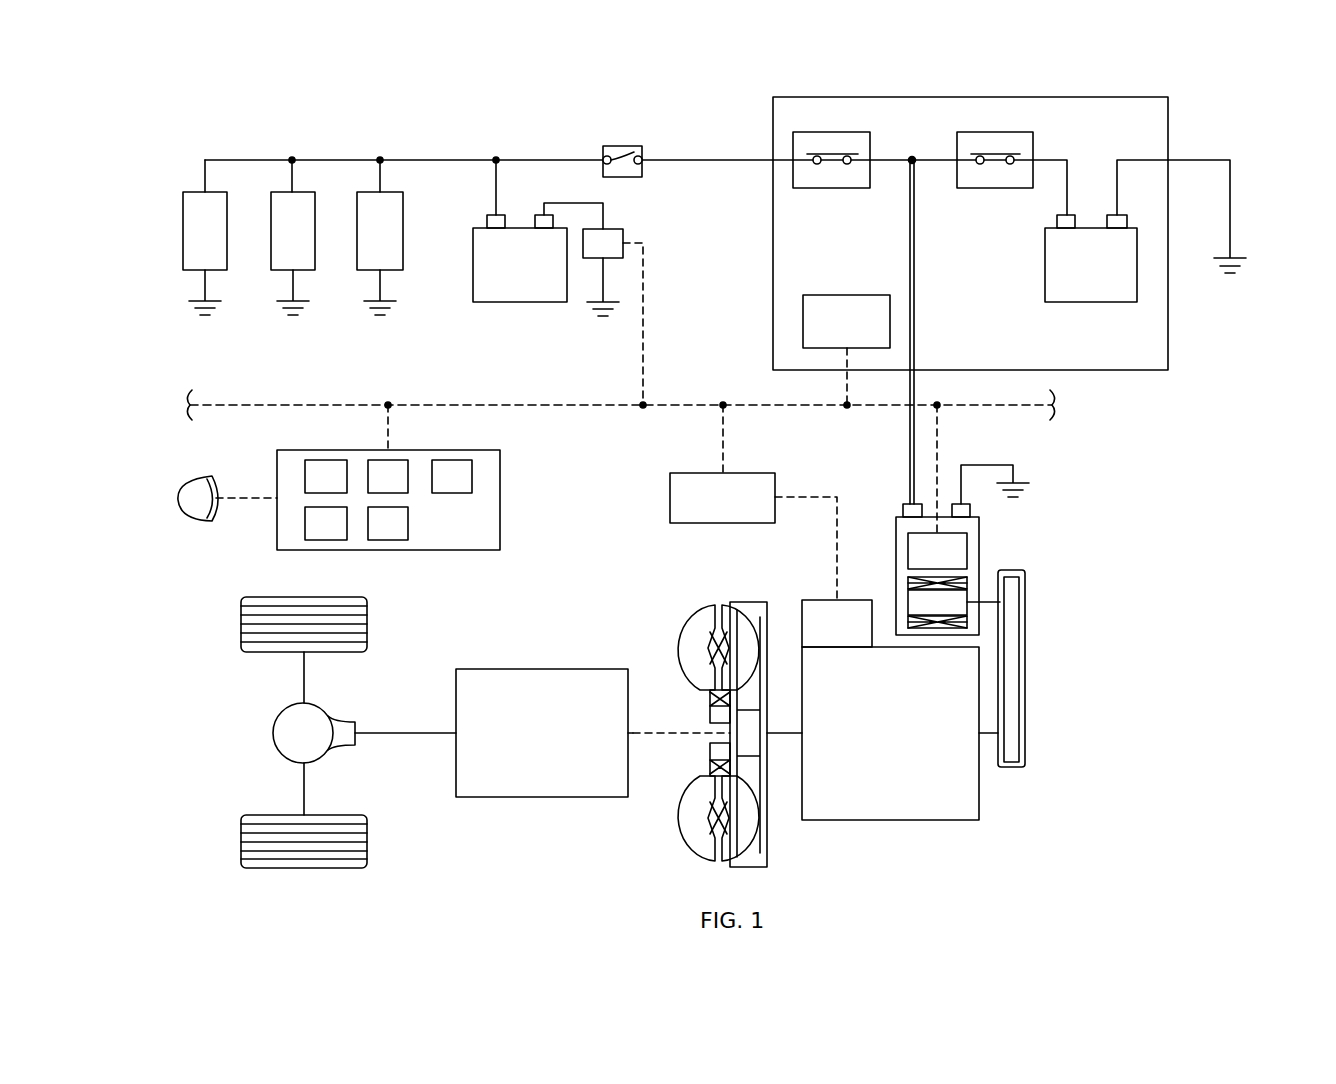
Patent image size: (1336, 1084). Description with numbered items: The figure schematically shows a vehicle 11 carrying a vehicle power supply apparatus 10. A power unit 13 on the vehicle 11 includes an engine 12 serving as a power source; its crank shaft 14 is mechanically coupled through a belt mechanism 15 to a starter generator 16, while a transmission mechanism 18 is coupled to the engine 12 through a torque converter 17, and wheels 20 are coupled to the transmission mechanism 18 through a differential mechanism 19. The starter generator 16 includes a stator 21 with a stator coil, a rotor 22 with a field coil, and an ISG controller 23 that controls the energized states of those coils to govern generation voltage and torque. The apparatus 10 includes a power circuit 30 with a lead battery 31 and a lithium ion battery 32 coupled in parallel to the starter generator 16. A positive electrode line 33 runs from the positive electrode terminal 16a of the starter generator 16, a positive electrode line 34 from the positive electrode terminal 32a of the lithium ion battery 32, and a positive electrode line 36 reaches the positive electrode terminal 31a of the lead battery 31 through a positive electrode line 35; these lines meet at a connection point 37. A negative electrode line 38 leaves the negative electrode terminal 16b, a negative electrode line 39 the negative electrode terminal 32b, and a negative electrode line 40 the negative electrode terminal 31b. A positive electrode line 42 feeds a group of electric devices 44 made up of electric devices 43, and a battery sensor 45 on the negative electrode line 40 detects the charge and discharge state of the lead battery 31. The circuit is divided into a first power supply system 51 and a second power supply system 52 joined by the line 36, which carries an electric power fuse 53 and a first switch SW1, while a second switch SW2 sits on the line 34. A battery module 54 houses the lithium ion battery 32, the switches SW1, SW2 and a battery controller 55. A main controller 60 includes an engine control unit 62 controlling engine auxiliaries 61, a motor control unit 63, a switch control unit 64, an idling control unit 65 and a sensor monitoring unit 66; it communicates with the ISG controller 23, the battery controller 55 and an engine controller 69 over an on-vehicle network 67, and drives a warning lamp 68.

The vehicle power supply apparatus 10 is at (158, 102).
The vehicle 11 is at (1176, 466).
The engine 12 is at (980, 800).
The power unit 13 is at (978, 846).
The crank shaft 14 is at (790, 733).
The belt mechanism 15 is at (1017, 672).
The starter generator 16 is at (884, 522).
The positive electrode terminal 16a is at (906, 503).
The negative electrode terminal 16b is at (972, 510).
The torque converter 17 is at (690, 836).
The transmission mechanism 18 is at (534, 669).
The differential mechanism 19 is at (273, 734).
The wheels 20 is at (241, 622).
The stator 21 is at (934, 628).
The rotor 22 is at (960, 597).
The ISG controller 23 is at (968, 556).
The power circuit 30 is at (1242, 98).
The lead battery 31 is at (472, 268).
The positive electrode terminal 31a is at (486, 222).
The negative electrode terminal 31b is at (544, 232).
The lithium ion battery 32 is at (1044, 290).
The positive electrode terminal 32a is at (1066, 232).
The negative electrode terminal 32b is at (1128, 220).
The positive electrode line 33 is at (916, 340).
The positive electrode line 34 is at (925, 165).
The positive electrode line 35 is at (499, 190).
The positive electrode line 36 is at (548, 160).
The connection point 37 is at (912, 157).
The negative electrode line 38 is at (1016, 480).
The negative electrode line 39 is at (1122, 160).
The negative electrode line 40 is at (605, 208).
The positive electrode line 42 is at (330, 160).
The electric devices 43 is at (190, 272).
The group of electric devices 44 is at (176, 176).
The battery sensor 45 is at (624, 240).
The first power supply system 51 is at (296, 138).
The second power supply system 52 is at (1200, 138).
The electric power fuse 53 is at (621, 146).
The battery module 54 is at (1186, 338).
The battery controller 55 is at (860, 295).
The main controller 60 is at (501, 476).
The engine auxiliaries 61 is at (856, 600).
The engine control unit 62 is at (326, 476).
The motor control unit 63 is at (388, 476).
The switch control unit 64 is at (452, 476).
The idling control unit 65 is at (326, 523).
The sensor monitoring unit 66 is at (388, 523).
The on-vehicle network 67 is at (590, 404).
The warning lamp 68 is at (180, 498).
The engine controller 69 is at (670, 490).
The first switch SW1 is at (815, 190).
The second switch SW2 is at (985, 190).